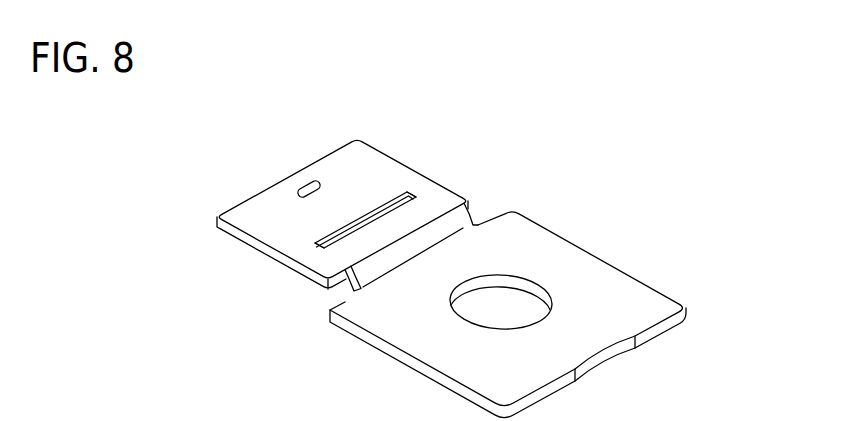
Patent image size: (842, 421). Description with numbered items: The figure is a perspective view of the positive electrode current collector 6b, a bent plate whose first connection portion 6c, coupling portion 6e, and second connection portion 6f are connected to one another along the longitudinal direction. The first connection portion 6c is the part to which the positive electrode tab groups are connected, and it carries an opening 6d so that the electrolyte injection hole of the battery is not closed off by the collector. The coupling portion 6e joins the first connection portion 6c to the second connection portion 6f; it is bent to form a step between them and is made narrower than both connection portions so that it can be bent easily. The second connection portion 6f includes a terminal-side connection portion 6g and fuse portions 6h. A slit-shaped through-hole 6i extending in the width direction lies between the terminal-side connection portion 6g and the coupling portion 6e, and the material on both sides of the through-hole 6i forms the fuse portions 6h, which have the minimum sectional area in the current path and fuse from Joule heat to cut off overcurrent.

The positive electrode current collector 6b is at (525, 177).
The first connection portion 6c is at (603, 267).
The opening 6d is at (506, 310).
The coupling portion 6e is at (347, 278).
The second connection portion 6f is at (385, 149).
The terminal-side connection portion 6g is at (235, 213).
The fuse portions 6h is at (422, 194).
The slit-shaped through-hole 6i is at (362, 228).